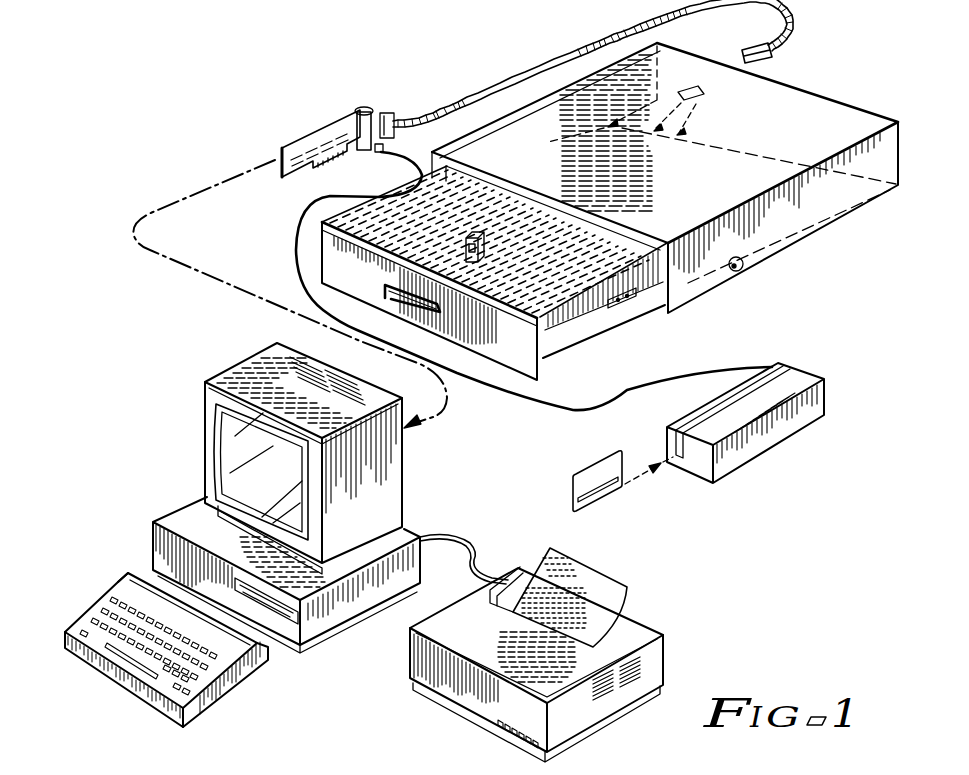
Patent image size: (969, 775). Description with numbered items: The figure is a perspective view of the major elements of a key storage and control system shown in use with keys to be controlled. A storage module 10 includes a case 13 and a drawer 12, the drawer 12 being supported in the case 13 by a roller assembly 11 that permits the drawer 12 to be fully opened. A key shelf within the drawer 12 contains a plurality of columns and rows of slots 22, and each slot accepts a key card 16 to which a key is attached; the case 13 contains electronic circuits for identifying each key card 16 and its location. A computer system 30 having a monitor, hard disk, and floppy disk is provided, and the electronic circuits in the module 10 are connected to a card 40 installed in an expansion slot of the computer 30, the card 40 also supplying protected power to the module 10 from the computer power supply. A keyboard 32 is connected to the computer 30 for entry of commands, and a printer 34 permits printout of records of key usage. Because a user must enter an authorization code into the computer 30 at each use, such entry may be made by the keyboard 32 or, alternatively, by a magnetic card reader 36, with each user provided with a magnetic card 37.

The storage module 10 is at (610, 220).
The roller assembly 11 is at (626, 312).
The drawer 12 is at (494, 273).
The case 13 is at (827, 120).
The key card 16 is at (488, 237).
The slots 22 is at (549, 195).
The computer system 30 is at (192, 421).
The keyboard 32 is at (141, 692).
The printer 34 is at (648, 630).
The magnetic card reader 36 is at (830, 397).
The magnetic card 37 is at (608, 460).
The card 40 is at (294, 138).